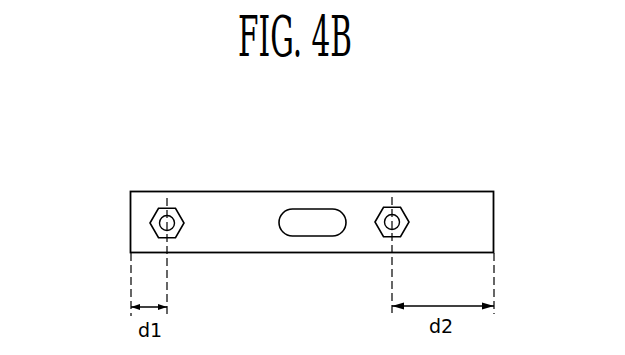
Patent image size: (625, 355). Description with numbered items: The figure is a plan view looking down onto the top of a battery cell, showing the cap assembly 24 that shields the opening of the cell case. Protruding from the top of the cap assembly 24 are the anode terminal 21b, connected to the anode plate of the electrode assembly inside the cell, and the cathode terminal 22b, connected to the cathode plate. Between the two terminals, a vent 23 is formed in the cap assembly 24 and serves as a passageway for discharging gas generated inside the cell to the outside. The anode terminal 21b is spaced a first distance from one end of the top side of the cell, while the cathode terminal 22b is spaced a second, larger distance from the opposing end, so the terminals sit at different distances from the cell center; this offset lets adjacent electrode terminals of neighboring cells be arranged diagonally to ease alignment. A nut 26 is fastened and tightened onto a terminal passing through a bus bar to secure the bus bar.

The anode terminal 21b is at (163, 207).
The cathode terminal 22b is at (393, 207).
The vent 23 is at (313, 216).
The cap assembly 24 is at (227, 216).
The nut 26 is at (153, 221).